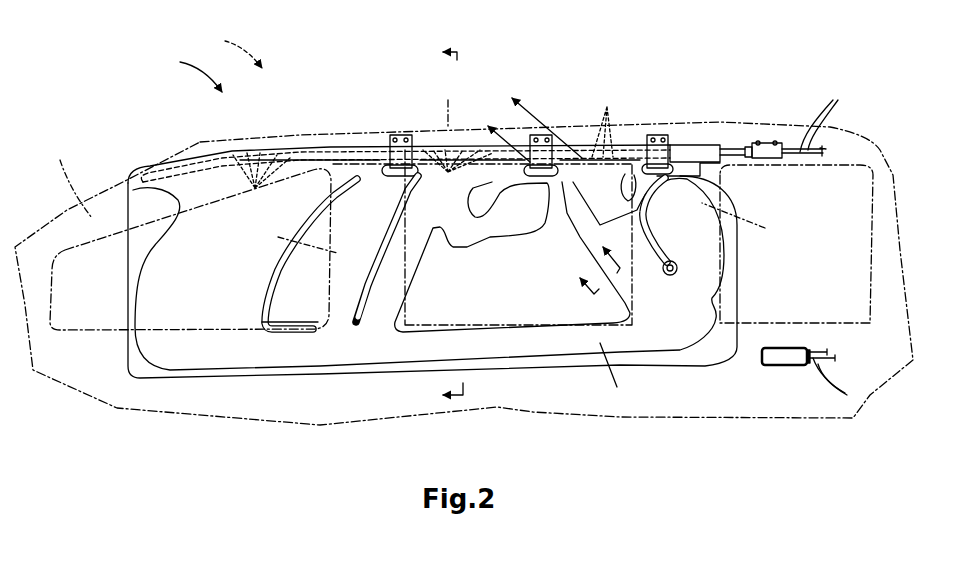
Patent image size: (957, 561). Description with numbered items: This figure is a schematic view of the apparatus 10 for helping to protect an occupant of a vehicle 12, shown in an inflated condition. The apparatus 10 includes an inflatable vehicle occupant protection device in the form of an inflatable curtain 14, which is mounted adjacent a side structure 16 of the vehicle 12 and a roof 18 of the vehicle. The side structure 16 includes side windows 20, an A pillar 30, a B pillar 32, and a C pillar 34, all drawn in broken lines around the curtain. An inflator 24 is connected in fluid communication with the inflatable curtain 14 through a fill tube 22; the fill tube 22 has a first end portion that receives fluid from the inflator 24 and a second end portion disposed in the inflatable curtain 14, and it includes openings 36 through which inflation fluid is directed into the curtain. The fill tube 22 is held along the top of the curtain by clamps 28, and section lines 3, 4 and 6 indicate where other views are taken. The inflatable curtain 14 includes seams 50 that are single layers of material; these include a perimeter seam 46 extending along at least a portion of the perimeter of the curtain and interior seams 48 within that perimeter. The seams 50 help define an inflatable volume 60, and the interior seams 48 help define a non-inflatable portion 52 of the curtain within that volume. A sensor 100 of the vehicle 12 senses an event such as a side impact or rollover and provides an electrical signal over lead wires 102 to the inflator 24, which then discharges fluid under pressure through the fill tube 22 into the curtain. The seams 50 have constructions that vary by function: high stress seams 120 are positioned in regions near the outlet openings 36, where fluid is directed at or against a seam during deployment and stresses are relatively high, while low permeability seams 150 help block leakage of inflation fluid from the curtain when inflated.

The apparatus 10 is at (190, 72).
The vehicle 12 is at (232, 51).
The inflatable curtain 14 is at (346, 170).
The side structure 16 is at (533, 395).
The roof 18 is at (405, 133).
The side windows 20 is at (98, 307).
The fill tube 22 is at (733, 146).
The inflator 24 is at (768, 146).
The clamps 28 is at (401, 134).
The A pillar 30 is at (69, 180).
The B pillar 32 is at (296, 241).
The C pillar 34 is at (743, 222).
The openings 36 is at (427, 147).
The perimeter seam 46 is at (338, 368).
The interior seams 48 is at (258, 312).
The seams 50 is at (263, 293).
The non-inflatable portion 52 is at (472, 308).
The inflatable volume 60 is at (614, 373).
The sensor 100 is at (780, 359).
The lead wires 102 is at (836, 247).
The high stress seams 120 is at (368, 179).
The low permeability seams 150 is at (280, 268).
The section line 3- 3 is at (442, 225).
The section line 4- 4 is at (527, 122).
The section line 6- 6 is at (593, 263).